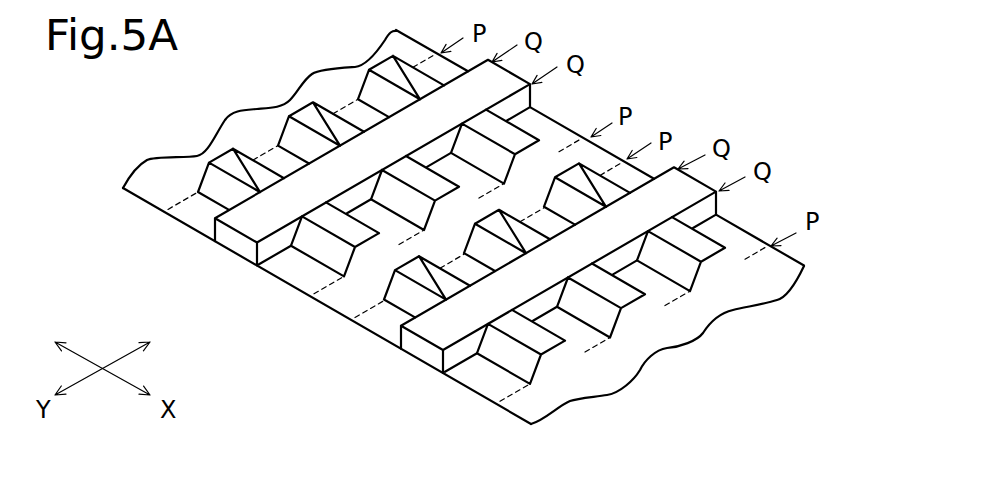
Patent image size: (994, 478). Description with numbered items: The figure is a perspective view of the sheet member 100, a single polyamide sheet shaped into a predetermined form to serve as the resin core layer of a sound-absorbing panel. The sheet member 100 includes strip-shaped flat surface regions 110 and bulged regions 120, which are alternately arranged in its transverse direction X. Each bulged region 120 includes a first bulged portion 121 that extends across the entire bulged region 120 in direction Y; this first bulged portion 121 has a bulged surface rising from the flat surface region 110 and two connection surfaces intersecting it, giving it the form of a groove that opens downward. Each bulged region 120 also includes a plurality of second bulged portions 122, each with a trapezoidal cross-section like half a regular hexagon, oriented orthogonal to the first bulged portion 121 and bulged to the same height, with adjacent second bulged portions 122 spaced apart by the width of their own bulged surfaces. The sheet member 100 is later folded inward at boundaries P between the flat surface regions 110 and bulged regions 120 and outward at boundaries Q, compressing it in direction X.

The sheet member 100 is at (680, 69).
The flat surface region 110 is at (344, 325).
The bulged region 120 is at (476, 405).
The first bulged portion 121 is at (305, 184).
The second bulged portion 122 is at (366, 66).